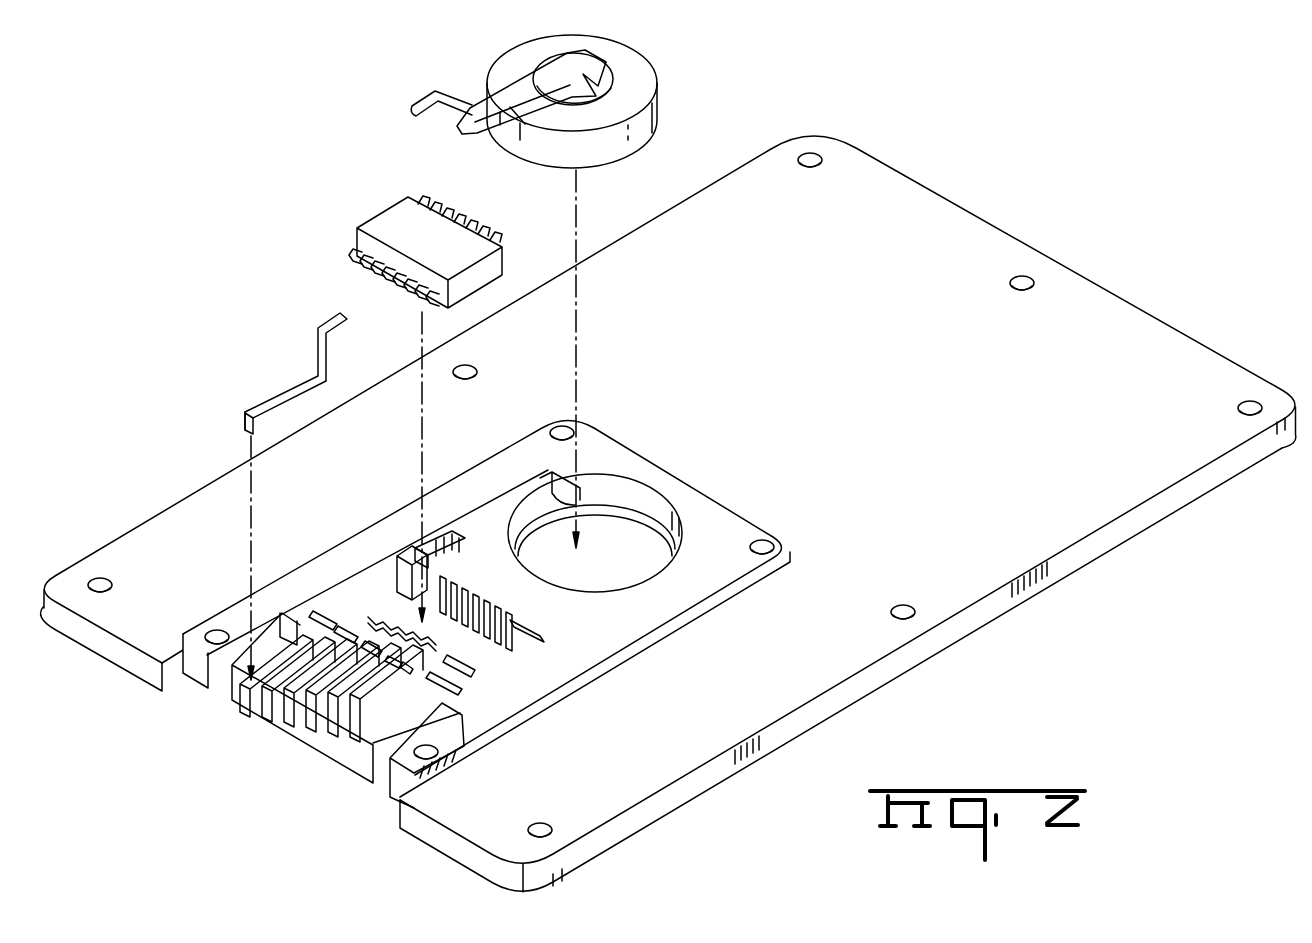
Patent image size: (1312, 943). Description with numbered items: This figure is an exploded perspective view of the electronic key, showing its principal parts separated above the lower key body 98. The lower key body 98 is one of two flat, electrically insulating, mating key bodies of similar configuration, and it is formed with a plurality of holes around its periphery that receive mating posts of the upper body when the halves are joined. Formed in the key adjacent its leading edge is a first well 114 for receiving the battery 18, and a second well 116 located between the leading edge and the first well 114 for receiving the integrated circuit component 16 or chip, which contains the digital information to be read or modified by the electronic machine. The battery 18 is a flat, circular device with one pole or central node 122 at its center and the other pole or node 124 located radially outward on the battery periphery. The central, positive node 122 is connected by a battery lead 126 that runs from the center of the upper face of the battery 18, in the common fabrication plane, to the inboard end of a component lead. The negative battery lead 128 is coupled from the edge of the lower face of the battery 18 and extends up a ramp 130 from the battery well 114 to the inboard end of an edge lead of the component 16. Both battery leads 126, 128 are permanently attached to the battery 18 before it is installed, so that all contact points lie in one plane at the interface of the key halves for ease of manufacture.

The integrated circuit component 16 is at (378, 214).
The battery 18 is at (657, 95).
The lower key body 98 is at (927, 647).
The first well 114 is at (613, 543).
The second well 116 is at (457, 643).
The central node 122 is at (592, 73).
The peripheral node 124 is at (653, 127).
The battery lead 126 is at (525, 124).
The negative battery lead 128 is at (460, 102).
The ramp 130 is at (463, 563).